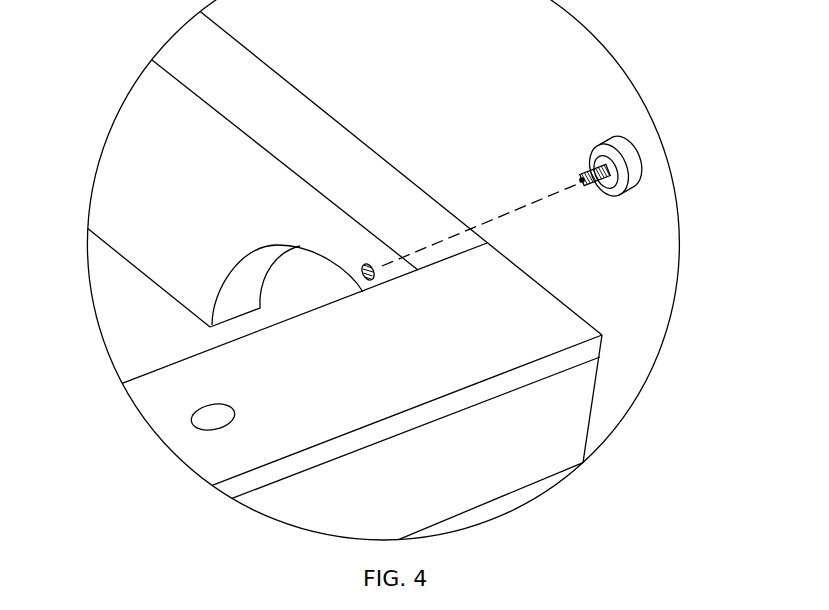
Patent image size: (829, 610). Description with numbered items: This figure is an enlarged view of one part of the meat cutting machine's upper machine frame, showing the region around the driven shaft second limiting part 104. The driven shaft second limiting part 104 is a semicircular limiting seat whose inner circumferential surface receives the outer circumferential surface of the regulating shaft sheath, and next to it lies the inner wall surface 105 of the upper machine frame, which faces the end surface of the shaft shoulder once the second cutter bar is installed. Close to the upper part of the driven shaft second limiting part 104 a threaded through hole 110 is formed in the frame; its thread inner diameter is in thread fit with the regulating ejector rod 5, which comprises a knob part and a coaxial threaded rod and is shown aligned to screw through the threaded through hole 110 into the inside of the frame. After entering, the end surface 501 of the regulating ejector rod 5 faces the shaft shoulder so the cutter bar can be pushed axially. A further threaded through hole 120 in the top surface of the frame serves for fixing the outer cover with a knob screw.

The inner wall surface 105 is at (163, 157).
The driven shaft second limiting part 104 is at (297, 247).
The threaded through hole 110 is at (377, 266).
The regulating ejector rod 5 is at (634, 139).
The end surface 501 is at (593, 187).
The threaded through hole 120 is at (193, 428).